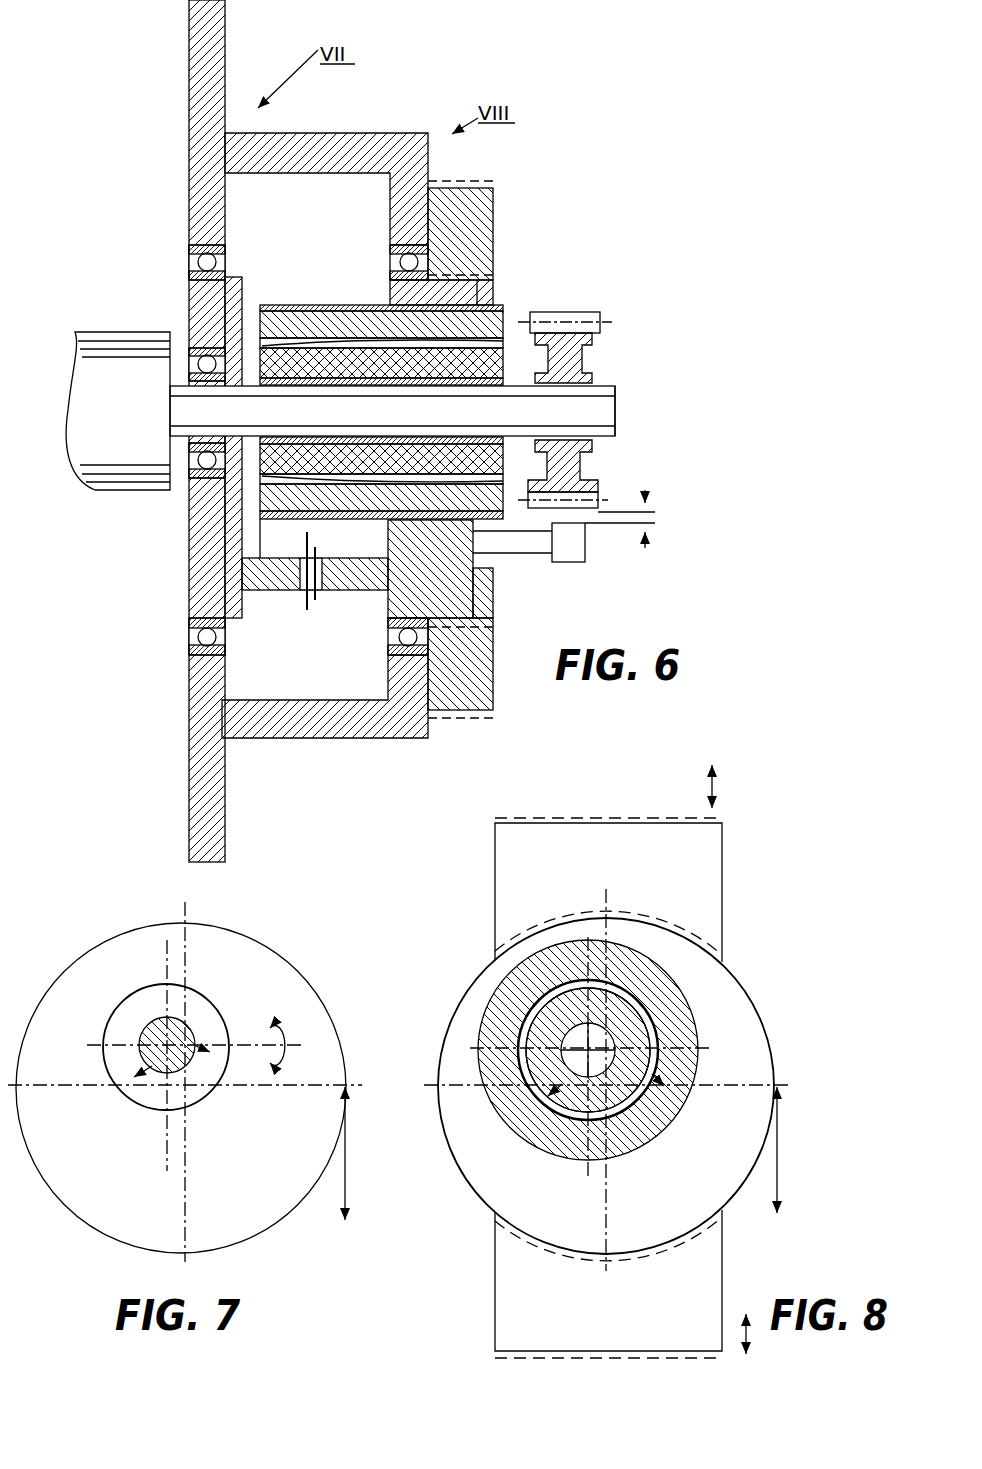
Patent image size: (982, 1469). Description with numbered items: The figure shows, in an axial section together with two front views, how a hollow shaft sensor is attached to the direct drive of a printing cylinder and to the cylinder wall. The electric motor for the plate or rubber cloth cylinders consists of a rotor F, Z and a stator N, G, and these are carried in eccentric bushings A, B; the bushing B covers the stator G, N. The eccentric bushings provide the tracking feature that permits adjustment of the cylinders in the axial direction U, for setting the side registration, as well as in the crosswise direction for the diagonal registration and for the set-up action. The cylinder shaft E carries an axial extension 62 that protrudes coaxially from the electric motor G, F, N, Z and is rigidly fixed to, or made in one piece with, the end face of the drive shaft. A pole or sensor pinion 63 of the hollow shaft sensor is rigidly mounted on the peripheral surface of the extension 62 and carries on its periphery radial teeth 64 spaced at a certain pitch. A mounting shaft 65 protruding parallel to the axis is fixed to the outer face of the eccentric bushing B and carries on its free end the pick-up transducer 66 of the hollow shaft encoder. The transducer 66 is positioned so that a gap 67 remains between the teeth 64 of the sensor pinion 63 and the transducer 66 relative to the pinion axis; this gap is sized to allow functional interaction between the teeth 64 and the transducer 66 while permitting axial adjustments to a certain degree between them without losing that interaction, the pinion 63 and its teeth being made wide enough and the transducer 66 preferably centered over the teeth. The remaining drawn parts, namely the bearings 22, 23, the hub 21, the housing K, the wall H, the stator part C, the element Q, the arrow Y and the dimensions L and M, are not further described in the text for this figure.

In FIG. 6, the hub 21 is at (197, 338).
In FIG. 7, the hub 21 is at (116, 1031).
In FIG. 6, the bearing 22 is at (190, 277).
In FIG. 6, the bearing 23 is at (393, 258).
In FIG. 6, the axial extension 62 is at (606, 405).
In FIG. 6, the sensor pinion 63 is at (590, 360).
In FIG. 6, the radial teeth 64 is at (586, 316).
In FIG. 6, the mounting shaft 65 is at (533, 553).
In FIG. 6, the pick-up transducer 66 is at (580, 560).
In FIG. 6, the gap 67 is at (628, 513).
In FIG. 6, the eccentric bushing A is at (190, 596).
In FIG. 7, the eccentric bushing A is at (238, 1248).
In FIG. 6, the eccentric bushing B is at (470, 300).
In FIG. 8, the eccentric bushing B is at (482, 1200).
In FIG. 6, the stator C is at (480, 250).
In FIG. 8, the stator C is at (493, 1278).
In FIG. 6, the cylinder shaft E is at (488, 404).
In FIG. 7, the cylinder shaft E is at (157, 1022).
In FIG. 8, the cylinder shaft E is at (515, 1035).
In FIG. 6, the rotor F is at (330, 347).
In FIG. 8, the rotor F is at (487, 989).
In FIG. 6, the stator G is at (286, 308).
In FIG. 8, the stator G is at (510, 1135).
In FIG. 6, the support plate H is at (197, 173).
In FIG. 6, the housing K is at (417, 178).
In FIG. 6, the gap dimension L is at (515, 500).
In FIG. 6, the displacement M is at (460, 712).
In FIG. 8, the displacement M is at (742, 1059).
In FIG. 6, the stator N is at (286, 521).
In FIG. 6, the capacitor Q is at (315, 580).
In FIG. 6, the axial direction U is at (160, 416).
In FIG. 7, the rotation Y is at (250, 1048).
In FIG. 6, the rotor Z is at (496, 386).